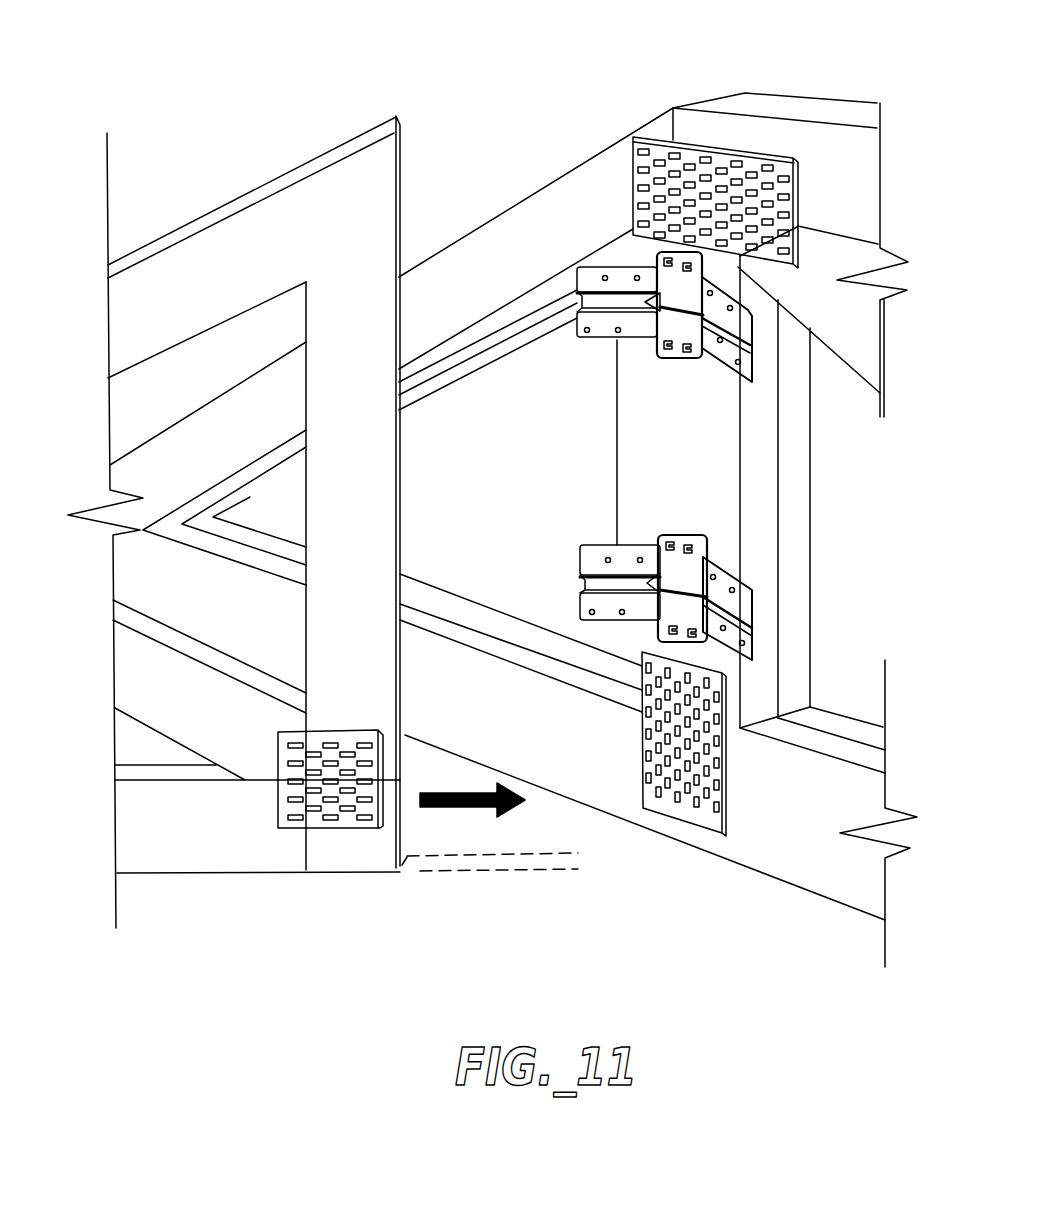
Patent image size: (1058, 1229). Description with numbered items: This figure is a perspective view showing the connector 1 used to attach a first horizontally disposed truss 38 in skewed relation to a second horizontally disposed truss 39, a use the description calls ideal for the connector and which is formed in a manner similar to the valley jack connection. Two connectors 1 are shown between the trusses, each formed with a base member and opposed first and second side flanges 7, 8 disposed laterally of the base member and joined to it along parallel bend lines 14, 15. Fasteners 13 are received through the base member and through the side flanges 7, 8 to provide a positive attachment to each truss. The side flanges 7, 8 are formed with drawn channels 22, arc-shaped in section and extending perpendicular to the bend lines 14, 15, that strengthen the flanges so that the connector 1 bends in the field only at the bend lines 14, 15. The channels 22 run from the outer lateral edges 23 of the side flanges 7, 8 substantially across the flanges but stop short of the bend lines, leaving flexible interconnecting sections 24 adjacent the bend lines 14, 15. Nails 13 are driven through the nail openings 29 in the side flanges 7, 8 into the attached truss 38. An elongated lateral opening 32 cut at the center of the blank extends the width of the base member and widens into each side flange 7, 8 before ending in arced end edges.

The connector 1 is at (593, 269).
The first side flange 7 is at (578, 340).
The second side flange 8 is at (750, 380).
The fasteners 13 is at (687, 266).
The first bend line 14 is at (657, 268).
The second bend line 15 is at (697, 358).
The channels 22 is at (577, 312).
The outer lateral edges 23 is at (577, 289).
The flexible interconnecting sections 24 is at (608, 556).
The nail openings 29 is at (640, 557).
The elongated lateral opening 32 is at (648, 327).
The first horizontally disposed truss 38 is at (400, 478).
The second horizontally disposed truss 39 is at (696, 108).